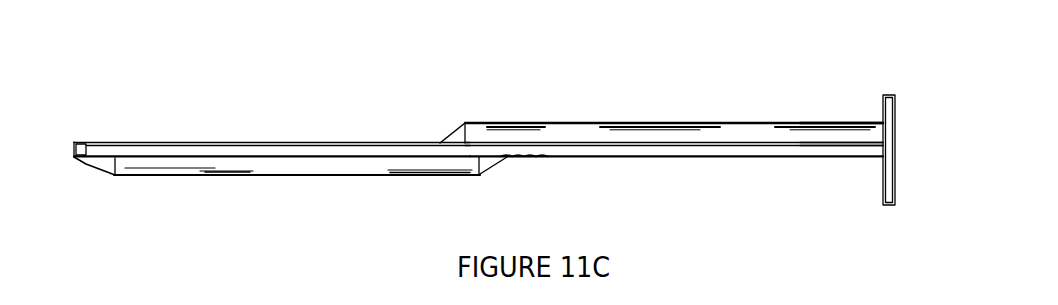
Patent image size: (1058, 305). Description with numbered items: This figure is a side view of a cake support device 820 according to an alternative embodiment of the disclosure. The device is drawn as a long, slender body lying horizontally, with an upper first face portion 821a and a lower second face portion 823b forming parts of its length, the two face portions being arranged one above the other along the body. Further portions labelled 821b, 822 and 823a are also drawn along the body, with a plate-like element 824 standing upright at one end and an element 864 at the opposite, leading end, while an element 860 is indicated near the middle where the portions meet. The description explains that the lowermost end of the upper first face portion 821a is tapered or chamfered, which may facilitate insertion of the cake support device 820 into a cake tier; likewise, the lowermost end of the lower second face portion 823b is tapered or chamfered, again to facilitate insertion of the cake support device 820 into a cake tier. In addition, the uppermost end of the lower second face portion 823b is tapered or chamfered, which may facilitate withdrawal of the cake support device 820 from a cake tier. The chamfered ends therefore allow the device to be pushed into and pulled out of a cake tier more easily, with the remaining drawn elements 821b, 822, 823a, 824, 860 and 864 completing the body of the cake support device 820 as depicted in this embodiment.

The cake support device 820 is at (377, 98).
The upper first face portion 821a is at (700, 155).
The second outer tube portion 821b is at (335, 163).
The distal tube portion 822 is at (818, 101).
The first inner tube portion 823a is at (662, 132).
The lower second face portion 823b is at (307, 141).
The hub plate 824 is at (895, 147).
The junction 860 is at (523, 151).
The end cap 864 is at (75, 143).